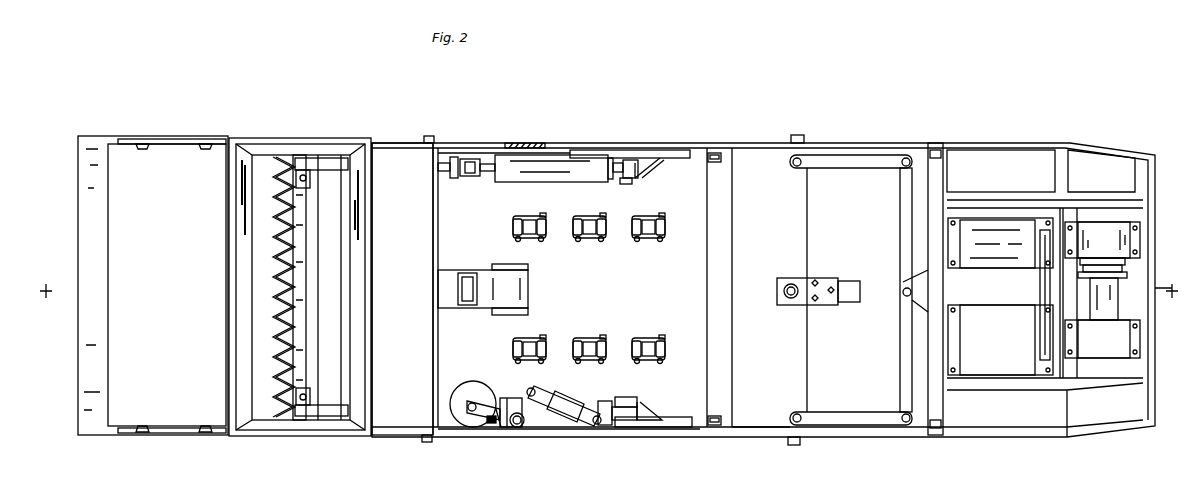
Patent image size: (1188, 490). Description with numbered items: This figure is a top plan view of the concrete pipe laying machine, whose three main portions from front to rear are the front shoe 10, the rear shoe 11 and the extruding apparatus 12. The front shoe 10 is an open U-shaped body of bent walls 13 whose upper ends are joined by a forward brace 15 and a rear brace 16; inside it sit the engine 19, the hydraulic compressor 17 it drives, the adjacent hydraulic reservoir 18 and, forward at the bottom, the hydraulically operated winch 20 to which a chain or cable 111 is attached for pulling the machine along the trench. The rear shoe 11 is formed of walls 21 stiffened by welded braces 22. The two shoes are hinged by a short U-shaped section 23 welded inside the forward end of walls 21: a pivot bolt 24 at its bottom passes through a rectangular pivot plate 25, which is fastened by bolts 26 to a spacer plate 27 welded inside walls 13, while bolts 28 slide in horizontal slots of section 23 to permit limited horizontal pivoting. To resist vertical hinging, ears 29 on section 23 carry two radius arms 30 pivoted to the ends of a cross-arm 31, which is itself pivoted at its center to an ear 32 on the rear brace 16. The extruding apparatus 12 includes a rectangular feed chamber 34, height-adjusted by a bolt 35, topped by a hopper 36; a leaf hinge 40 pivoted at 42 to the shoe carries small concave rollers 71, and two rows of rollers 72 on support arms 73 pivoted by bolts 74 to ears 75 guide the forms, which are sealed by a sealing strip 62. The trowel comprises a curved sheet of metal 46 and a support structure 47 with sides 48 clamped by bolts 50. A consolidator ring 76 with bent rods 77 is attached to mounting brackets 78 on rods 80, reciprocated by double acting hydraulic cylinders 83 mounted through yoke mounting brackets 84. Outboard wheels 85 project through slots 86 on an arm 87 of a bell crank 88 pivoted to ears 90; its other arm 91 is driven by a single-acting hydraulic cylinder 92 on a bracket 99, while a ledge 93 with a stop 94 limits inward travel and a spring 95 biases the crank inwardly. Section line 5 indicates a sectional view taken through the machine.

The section line 5 is at (608, 284).
The front shoe 10 is at (1042, 140).
The rear shoe 11 is at (570, 126).
The extruding apparatus 12 is at (257, 132).
The walls 13 is at (990, 152).
The forward brace 15 is at (1143, 168).
The rear brace 16 is at (936, 400).
The hydraulic compressor 17 is at (998, 268).
The hydraulic reservoir 18 is at (1019, 176).
The engine 19 is at (999, 346).
The hydraulically operated winch 20 is at (1106, 232).
The walls 21 is at (640, 147).
The braces 22 is at (708, 168).
The U-shaped section 23 is at (772, 432).
The pivot bolt 24 is at (790, 300).
The pivot plate 25 is at (782, 278).
The bolts 26 is at (830, 295).
The spacer plate 27 is at (858, 290).
The bolts 28 is at (804, 138).
The ears 29 is at (790, 162).
The radius arms 30 is at (858, 168).
The cross-arm 31 is at (900, 214).
The ear 32 is at (906, 304).
The feed chamber 34 is at (398, 295).
The bolt 35 is at (429, 140).
The hopper 36 is at (311, 142).
The leaf hinge 40 is at (446, 272).
The pivot 42 is at (518, 266).
The curved sheet of metal 46 is at (80, 215).
The support structure 47 is at (170, 241).
The sides 48 is at (170, 140).
The bolts 50 is at (140, 149).
The sealing strip 62 is at (341, 262).
The concave rollers 71 is at (464, 305).
The rollers 72 is at (513, 228).
The support arms 73 is at (520, 216).
The bolts 74 is at (542, 218).
The ears 75 is at (546, 229).
The consolidator ring 76 is at (312, 291).
The bent rods 77 is at (284, 255).
The mounting brackets 78 is at (296, 180).
The rods 80 is at (442, 172).
The double acting hydraulic cylinders 83 is at (546, 178).
The yoke mounting brackets 84 is at (660, 166).
The outboard wheels 85 is at (470, 390).
The slots 86 is at (474, 147).
The arm 87 is at (484, 400).
The bell crank 88 is at (519, 391).
The ears 90 is at (519, 428).
The arm 91 is at (545, 403).
The single-acting hydraulic cylinder 92 is at (571, 400).
The ledge 93 is at (506, 428).
The stop 94 is at (489, 420).
The spring 95 is at (498, 422).
The bracket 99 is at (597, 428).
The chain or cable 111 is at (1168, 285).